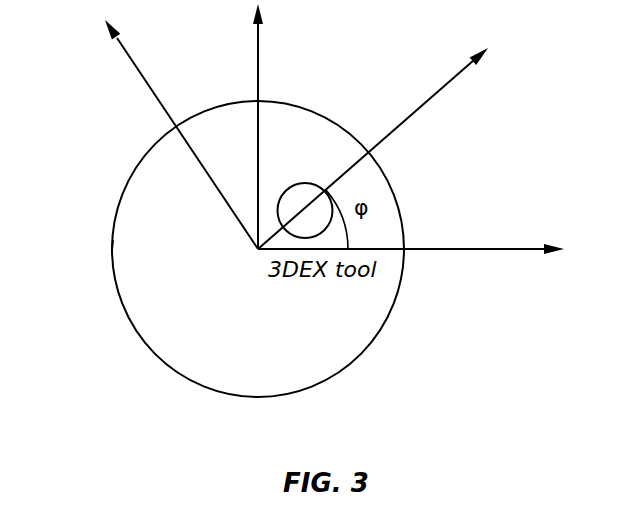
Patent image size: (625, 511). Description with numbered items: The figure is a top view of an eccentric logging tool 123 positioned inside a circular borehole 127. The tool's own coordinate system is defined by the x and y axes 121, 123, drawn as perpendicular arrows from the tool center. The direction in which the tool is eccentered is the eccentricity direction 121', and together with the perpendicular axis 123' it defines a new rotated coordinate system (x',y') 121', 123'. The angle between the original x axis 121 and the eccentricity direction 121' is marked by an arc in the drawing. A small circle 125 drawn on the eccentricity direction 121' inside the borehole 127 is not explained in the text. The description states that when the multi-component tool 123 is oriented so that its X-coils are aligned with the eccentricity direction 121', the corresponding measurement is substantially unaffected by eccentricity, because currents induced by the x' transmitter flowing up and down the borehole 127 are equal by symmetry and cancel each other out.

The x axis of tool coordinate system 121 is at (411, 237).
The eccentricity direction (x' axis) 121' is at (373, 148).
The eccentric logging tool 123 is at (221, 126).
The y' axis of rotated coordinate system 123' is at (153, 134).
The transmitter/receiver coil 125 is at (310, 183).
The circular borehole 127 is at (125, 239).